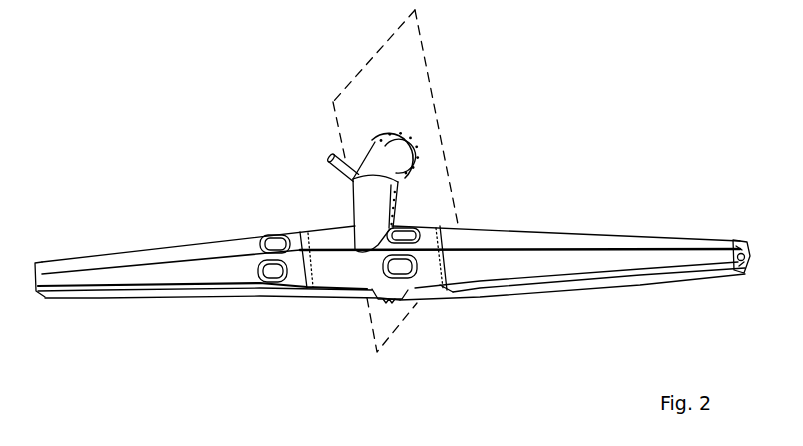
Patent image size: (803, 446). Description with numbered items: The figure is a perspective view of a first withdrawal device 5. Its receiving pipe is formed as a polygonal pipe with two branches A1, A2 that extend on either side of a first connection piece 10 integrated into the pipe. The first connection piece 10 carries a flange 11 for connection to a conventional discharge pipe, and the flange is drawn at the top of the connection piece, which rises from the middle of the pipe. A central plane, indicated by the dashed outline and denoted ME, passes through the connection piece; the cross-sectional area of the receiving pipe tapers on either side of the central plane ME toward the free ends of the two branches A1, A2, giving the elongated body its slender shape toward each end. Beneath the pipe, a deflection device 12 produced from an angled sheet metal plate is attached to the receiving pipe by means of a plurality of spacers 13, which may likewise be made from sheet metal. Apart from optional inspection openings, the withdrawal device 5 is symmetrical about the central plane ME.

The first withdrawal device 5 is at (236, 217).
The first connection piece 10 is at (416, 203).
The flange 11 is at (422, 153).
The deflection device 12 is at (168, 295).
The spacers 13 is at (45, 292).
The central plane ME is at (428, 80).
The first branch of the receiving pipe A1 is at (202, 246).
The second branch of the receiving pipe A2 is at (580, 242).